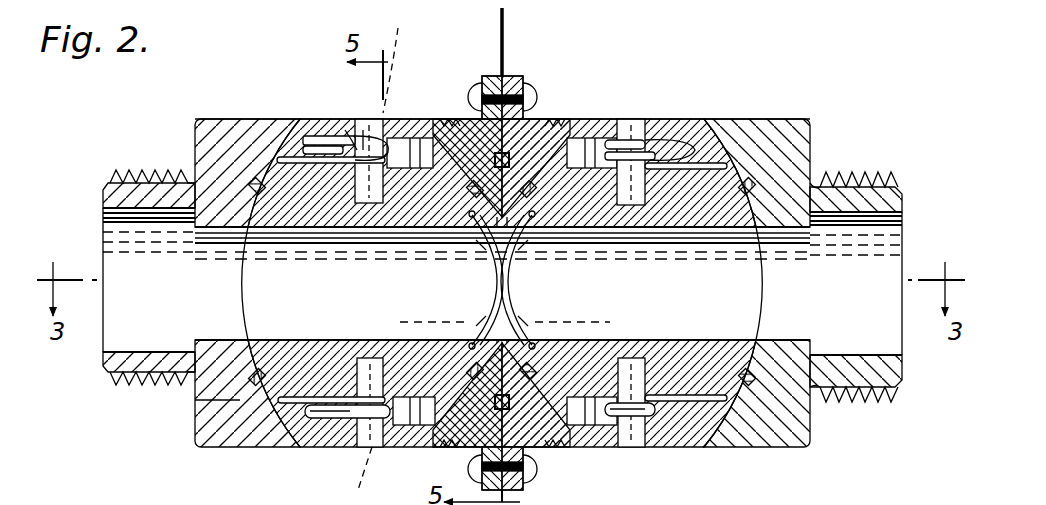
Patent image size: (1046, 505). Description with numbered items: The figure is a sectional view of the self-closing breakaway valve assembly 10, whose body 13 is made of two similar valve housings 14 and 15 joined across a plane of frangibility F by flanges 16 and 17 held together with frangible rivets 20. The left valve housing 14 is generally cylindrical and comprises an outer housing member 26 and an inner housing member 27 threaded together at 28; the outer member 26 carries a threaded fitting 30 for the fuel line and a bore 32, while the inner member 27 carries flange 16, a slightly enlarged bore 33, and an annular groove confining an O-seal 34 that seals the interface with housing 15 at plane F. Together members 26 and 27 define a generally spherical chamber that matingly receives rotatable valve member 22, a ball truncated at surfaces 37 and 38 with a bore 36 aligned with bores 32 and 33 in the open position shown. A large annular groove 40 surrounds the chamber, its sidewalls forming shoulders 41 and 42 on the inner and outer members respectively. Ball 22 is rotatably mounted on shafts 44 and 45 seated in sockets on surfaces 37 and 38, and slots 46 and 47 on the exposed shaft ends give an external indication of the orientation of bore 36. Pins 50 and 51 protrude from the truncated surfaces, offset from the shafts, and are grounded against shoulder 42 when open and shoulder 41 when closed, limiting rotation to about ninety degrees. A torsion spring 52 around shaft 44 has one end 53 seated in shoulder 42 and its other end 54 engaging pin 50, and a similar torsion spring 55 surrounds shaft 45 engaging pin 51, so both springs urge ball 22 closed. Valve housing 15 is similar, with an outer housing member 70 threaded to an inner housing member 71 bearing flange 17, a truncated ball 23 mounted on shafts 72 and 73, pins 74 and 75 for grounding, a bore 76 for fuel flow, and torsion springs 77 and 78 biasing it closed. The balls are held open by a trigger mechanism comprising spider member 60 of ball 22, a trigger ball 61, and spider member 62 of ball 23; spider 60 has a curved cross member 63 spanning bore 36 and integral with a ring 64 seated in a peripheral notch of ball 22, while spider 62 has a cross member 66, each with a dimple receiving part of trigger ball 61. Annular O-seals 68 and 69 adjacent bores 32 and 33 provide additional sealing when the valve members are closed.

The self-closing breakaway valve assembly 10 is at (800, 76).
The body 13 is at (238, 114).
The valve housing 14 is at (336, 447).
The valve housing 15 is at (770, 447).
The radial flange 16 is at (486, 77).
The radial flange 17 is at (524, 82).
The frangible rivets 20 is at (546, 100).
The rotatable valve member 22 is at (394, 447).
The rotatable valve member 23 is at (601, 128).
The outer housing member 26 is at (200, 130).
The inner housing member 27 is at (456, 130).
The threaded connection 28 is at (491, 118).
The threaded fitting 30 is at (105, 383).
The bore 32 is at (208, 338).
The bore 33 is at (490, 326).
The O-seal 34 is at (547, 120).
The bore 36 is at (245, 298).
The truncated surface 37 is at (409, 120).
The truncated surface 38 is at (418, 447).
The annular groove 40 is at (346, 128).
The shoulder 41 is at (429, 120).
The shoulder 42 is at (286, 150).
The shaft 44 is at (364, 128).
The shaft 45 is at (349, 447).
The slot 46 is at (399, 59).
The slot 47 is at (349, 475).
The pin 50 is at (316, 138).
The pin 51 is at (281, 404).
The torsion spring 52 is at (336, 220).
The spring end 53 is at (282, 157).
The spring end 54 is at (328, 136).
The torsion spring 55 is at (325, 418).
The spider member 60 is at (478, 270).
The trigger ball 61 is at (524, 270).
The spider member 62 is at (545, 262).
The curved cross member 63 is at (478, 249).
The ring 64 is at (478, 340).
The cross member 66 is at (526, 328).
The annular O-seal 68 is at (240, 398).
The annular O-seal 69 is at (459, 447).
The outer housing member 70 is at (812, 150).
The inner housing member 71 is at (552, 447).
The shaft 72 is at (633, 140).
The shaft 73 is at (640, 440).
The pin 74 is at (796, 148).
The pin 75 is at (716, 447).
The bore 76 is at (712, 228).
The torsion spring 77 is at (686, 140).
The torsion spring 78 is at (609, 447).
The plane of frangibility F is at (505, 42).